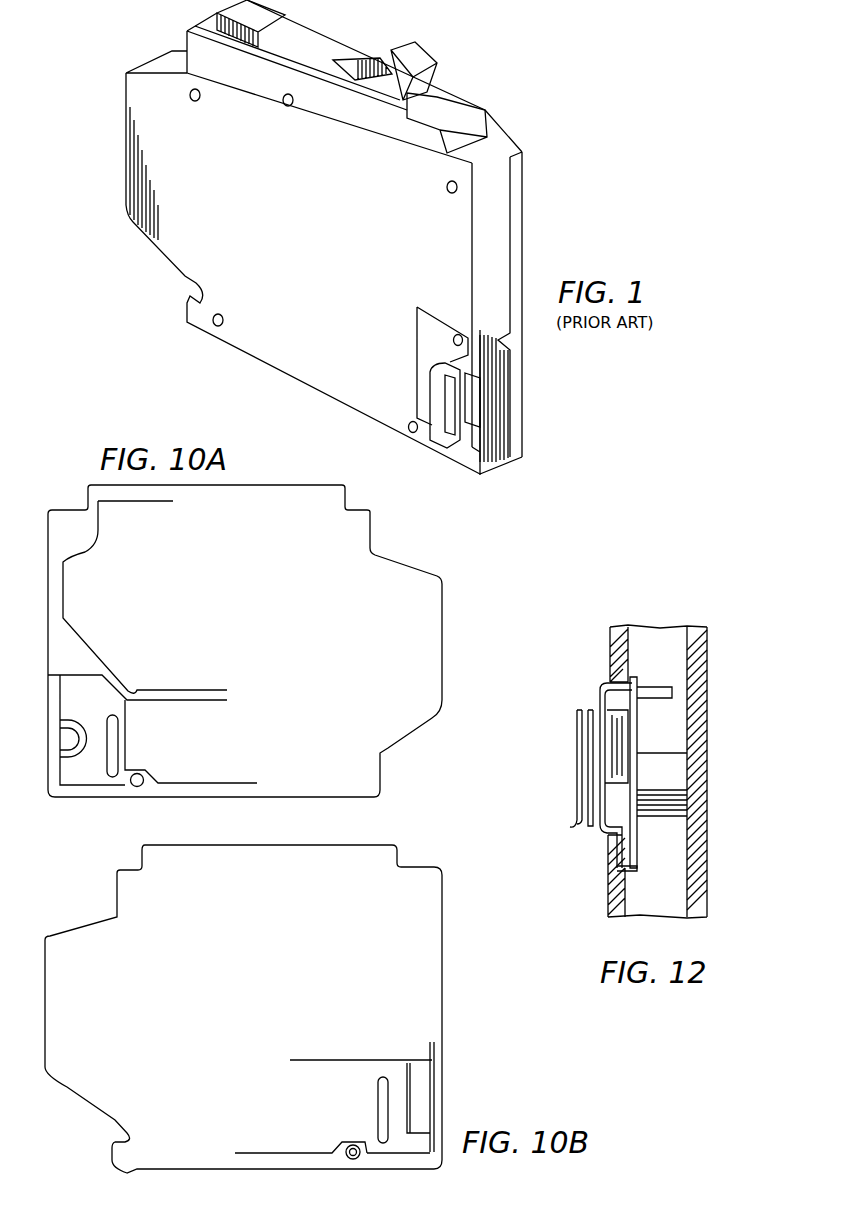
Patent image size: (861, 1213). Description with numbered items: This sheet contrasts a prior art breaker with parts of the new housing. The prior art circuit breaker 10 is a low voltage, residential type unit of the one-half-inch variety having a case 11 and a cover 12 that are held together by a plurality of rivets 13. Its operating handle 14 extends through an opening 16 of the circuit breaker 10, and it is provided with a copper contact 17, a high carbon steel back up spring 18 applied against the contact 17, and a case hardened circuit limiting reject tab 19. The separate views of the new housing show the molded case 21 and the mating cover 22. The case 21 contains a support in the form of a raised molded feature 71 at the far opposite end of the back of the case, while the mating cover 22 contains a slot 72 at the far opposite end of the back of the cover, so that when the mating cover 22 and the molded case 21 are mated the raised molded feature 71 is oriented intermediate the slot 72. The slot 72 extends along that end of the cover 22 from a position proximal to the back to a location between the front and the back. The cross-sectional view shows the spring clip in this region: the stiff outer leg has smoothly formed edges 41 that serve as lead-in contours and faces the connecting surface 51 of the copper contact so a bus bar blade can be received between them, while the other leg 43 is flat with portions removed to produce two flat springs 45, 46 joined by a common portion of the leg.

In FIG. 1, the circuit breaker 10 is at (100, 170).
In FIG. 1, the case 11 is at (497, 222).
In FIG. 1, the cover 12 is at (523, 262).
In FIG. 1, the rivets 13 is at (283, 99).
In FIG. 1, the operating handle 14 is at (430, 62).
In FIG. 1, the opening 16 is at (370, 70).
In FIG. 1, the copper contact 17 is at (437, 415).
In FIG. 1, the high carbon steel back up spring 18 is at (430, 375).
In FIG. 1, the case hardened circuit limiting reject tab 19 is at (473, 413).
In FIG. 10A, the molded case 21 is at (400, 572).
In FIG. 12, the molded case 21 is at (705, 688).
In FIG. 10B, the mating cover 22 is at (427, 955).
In FIG. 12, the mating cover 22 is at (606, 886).
In FIG. 12, the smoothly formed edges 41 is at (572, 822).
In FIG. 12, the other leg 43 is at (637, 753).
In FIG. 12, the flat spring 45 is at (637, 680).
In FIG. 12, the flat spring 46 is at (637, 864).
In FIG. 12, the connecting surface 51 is at (590, 706).
In FIG. 10A, the raised molded feature 71 is at (70, 720).
In FIG. 12, the raised molded feature 71 is at (652, 817).
In FIG. 10B, the slot 72 is at (420, 1098).
In FIG. 12, the slot 72 is at (607, 683).